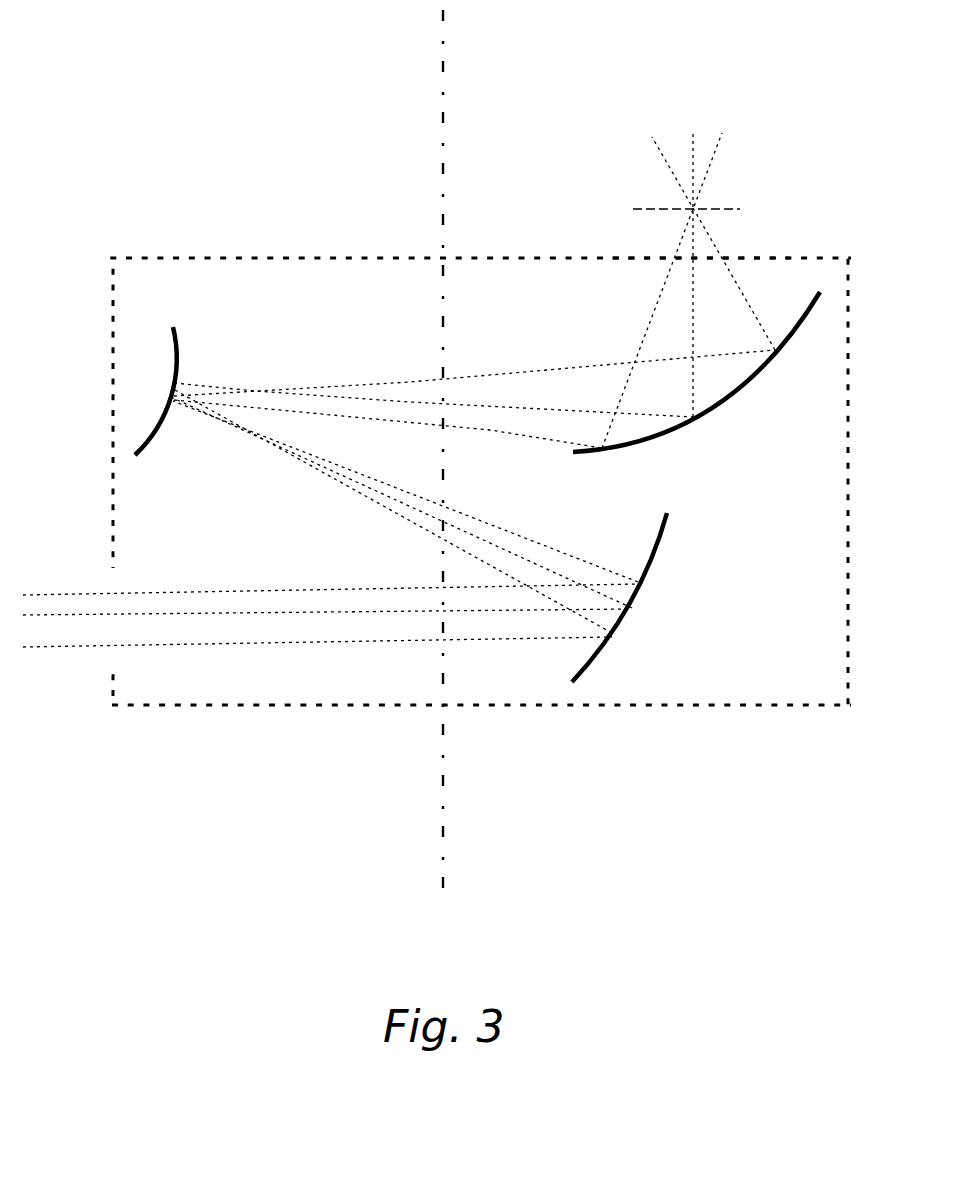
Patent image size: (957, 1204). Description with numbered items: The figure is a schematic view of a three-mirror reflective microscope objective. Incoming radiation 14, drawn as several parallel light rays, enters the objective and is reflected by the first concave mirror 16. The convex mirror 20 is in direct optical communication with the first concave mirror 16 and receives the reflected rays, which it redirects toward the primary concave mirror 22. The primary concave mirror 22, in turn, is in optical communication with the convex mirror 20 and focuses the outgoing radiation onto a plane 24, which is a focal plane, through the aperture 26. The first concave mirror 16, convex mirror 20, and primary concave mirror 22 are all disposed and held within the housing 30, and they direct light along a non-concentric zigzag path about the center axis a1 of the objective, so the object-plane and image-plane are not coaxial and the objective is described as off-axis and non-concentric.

The incoming radiation 14 is at (60, 663).
The first concave mirror 16 is at (628, 622).
The convex mirror 20 is at (172, 348).
The primary concave mirror 22 is at (740, 393).
The plane 24 is at (648, 209).
The aperture 26 is at (743, 253).
The housing 30 is at (212, 257).
The center axis a1 is at (443, 100).